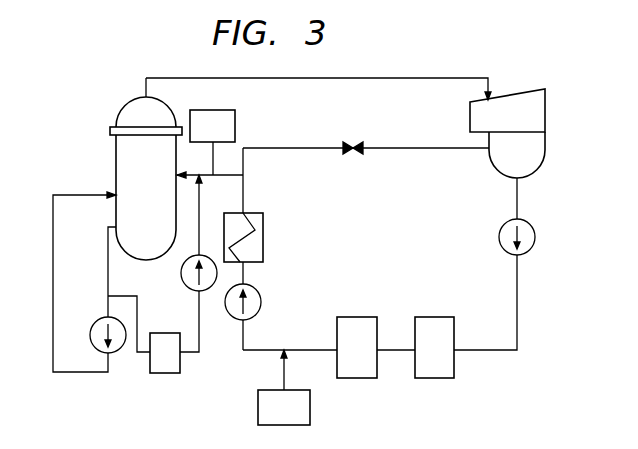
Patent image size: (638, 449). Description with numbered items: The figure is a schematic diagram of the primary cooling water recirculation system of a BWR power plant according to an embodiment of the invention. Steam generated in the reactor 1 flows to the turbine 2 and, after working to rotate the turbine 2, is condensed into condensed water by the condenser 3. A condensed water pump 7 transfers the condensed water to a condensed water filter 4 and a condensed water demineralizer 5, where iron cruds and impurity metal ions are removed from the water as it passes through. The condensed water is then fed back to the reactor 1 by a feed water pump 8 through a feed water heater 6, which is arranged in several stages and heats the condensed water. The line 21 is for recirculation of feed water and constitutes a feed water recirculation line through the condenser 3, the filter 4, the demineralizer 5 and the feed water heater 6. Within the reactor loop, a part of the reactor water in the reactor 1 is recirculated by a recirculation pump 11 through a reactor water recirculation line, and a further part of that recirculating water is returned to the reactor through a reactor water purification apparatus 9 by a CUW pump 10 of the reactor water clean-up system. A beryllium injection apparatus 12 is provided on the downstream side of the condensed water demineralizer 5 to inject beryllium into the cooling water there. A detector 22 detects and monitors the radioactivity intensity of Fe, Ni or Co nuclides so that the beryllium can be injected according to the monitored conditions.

The reactor 1 is at (116, 160).
The turbine 2 is at (522, 93).
The condenser 3 is at (490, 165).
The condensed water filter 4 is at (433, 317).
The condensed water demineralizer 5 is at (357, 317).
The feed water heater 6 is at (264, 233).
The condensed water pump 7 is at (499, 237).
The feed water pump 8 is at (262, 302).
The reactor water purification apparatus 9 is at (166, 333).
The CUW pump 10 is at (181, 273).
The recirculation pump 11 is at (95, 325).
The beryllium injection apparatus 12 is at (310, 403).
The line 21 is at (292, 147).
The detector 22 is at (232, 110).